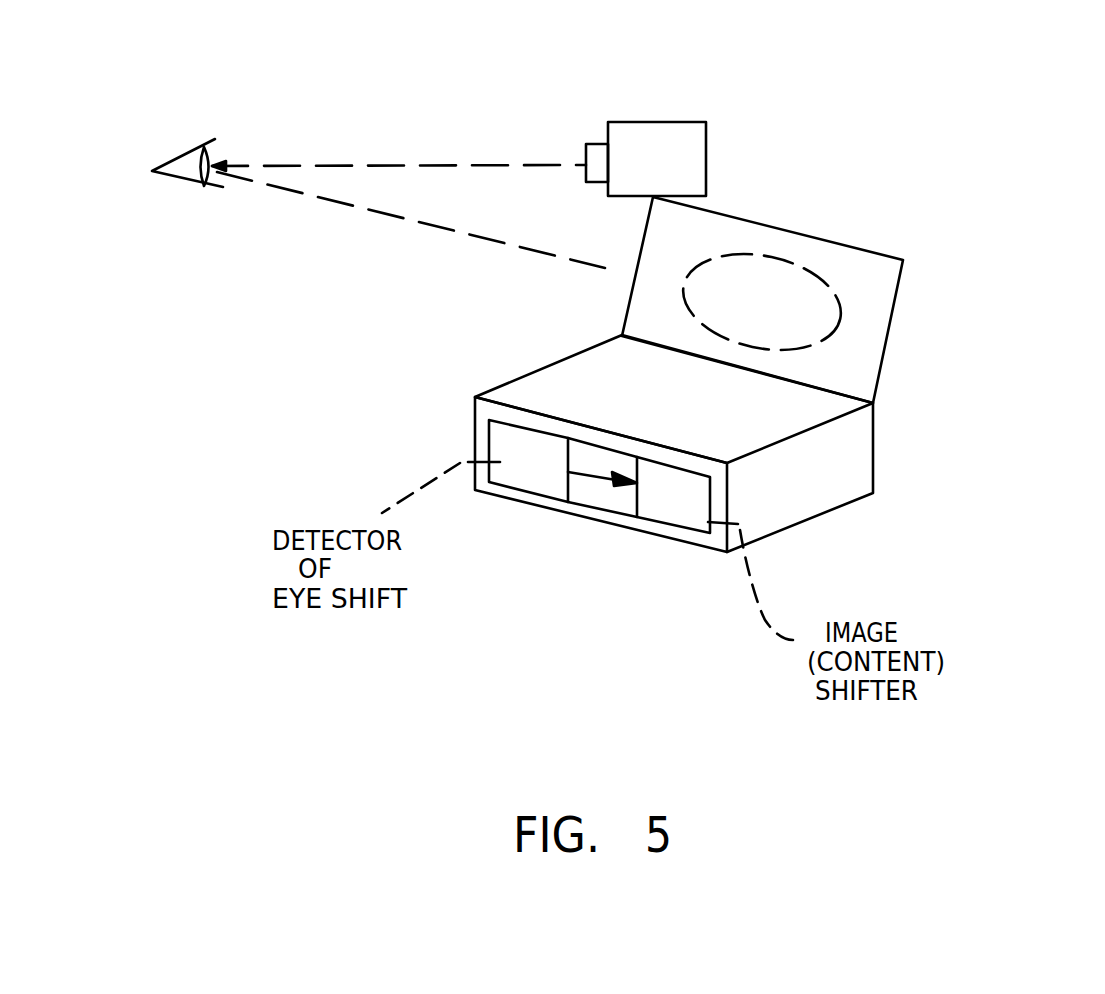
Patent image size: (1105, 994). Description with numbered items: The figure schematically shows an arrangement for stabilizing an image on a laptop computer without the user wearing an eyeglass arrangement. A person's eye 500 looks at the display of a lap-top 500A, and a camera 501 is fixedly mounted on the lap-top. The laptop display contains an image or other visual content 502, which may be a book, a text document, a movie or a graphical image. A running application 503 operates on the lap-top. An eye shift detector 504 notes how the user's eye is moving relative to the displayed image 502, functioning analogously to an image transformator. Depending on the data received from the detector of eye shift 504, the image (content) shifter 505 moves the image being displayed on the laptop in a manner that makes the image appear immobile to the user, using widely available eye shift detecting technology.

The eye 500 is at (182, 162).
The lap-top 500A is at (475, 433).
The camera 501 is at (706, 155).
The image or other visual content 502 is at (820, 303).
The running application 503 is at (858, 453).
The eye shift detector 504 is at (553, 490).
The image (content) shifter 505 is at (662, 520).